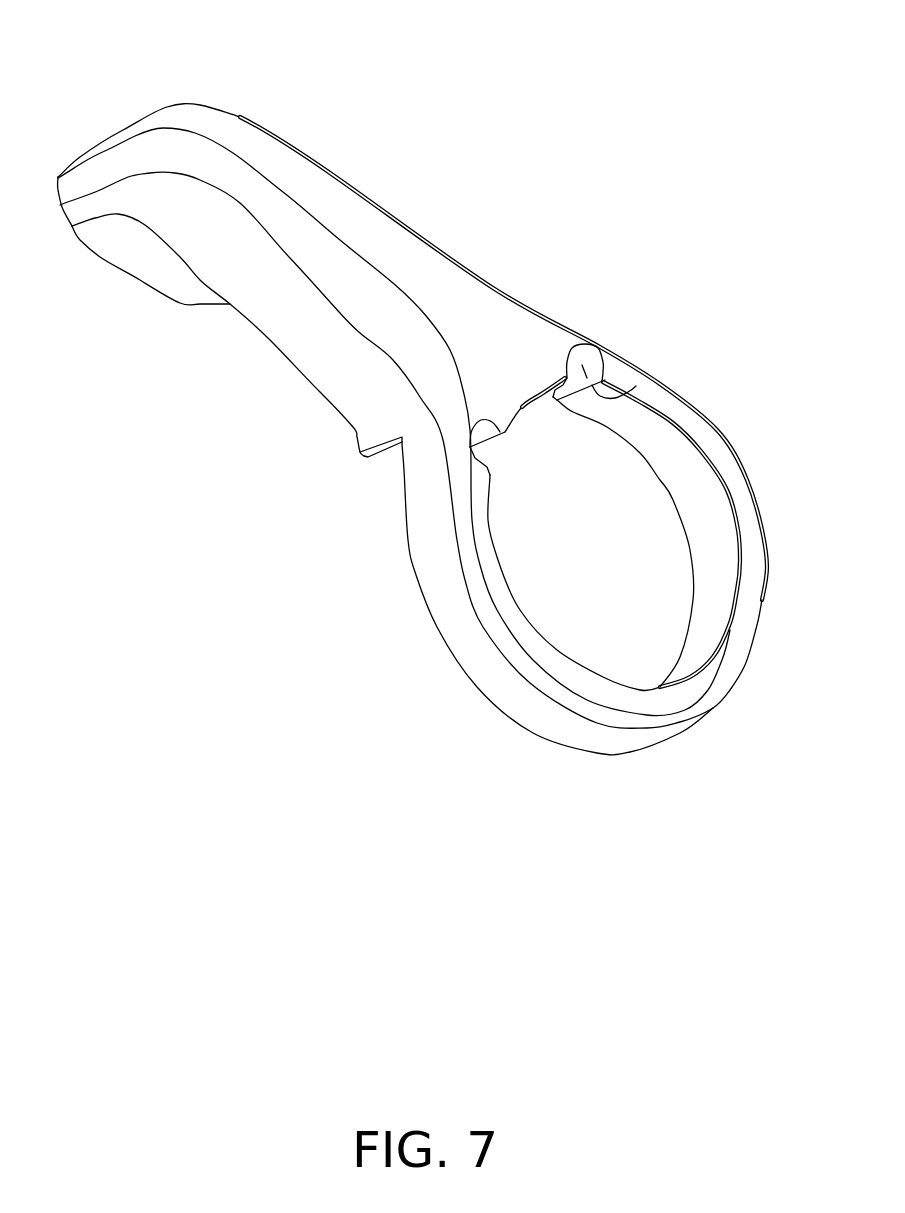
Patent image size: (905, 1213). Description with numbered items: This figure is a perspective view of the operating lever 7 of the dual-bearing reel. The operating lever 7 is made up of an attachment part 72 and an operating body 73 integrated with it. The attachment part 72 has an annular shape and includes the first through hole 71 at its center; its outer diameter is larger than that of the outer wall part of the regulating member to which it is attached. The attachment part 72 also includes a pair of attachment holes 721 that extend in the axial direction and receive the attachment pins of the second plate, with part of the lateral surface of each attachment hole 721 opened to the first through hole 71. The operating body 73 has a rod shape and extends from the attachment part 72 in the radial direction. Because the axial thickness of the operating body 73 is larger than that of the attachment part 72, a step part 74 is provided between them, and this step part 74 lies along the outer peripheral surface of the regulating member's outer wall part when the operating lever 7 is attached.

The operating lever 7 is at (562, 123).
The first through hole 71 is at (668, 462).
The attachment part 72 is at (717, 433).
The attachment hole 721 is at (623, 397).
The operating body 73 is at (390, 210).
The step part 74 is at (383, 458).